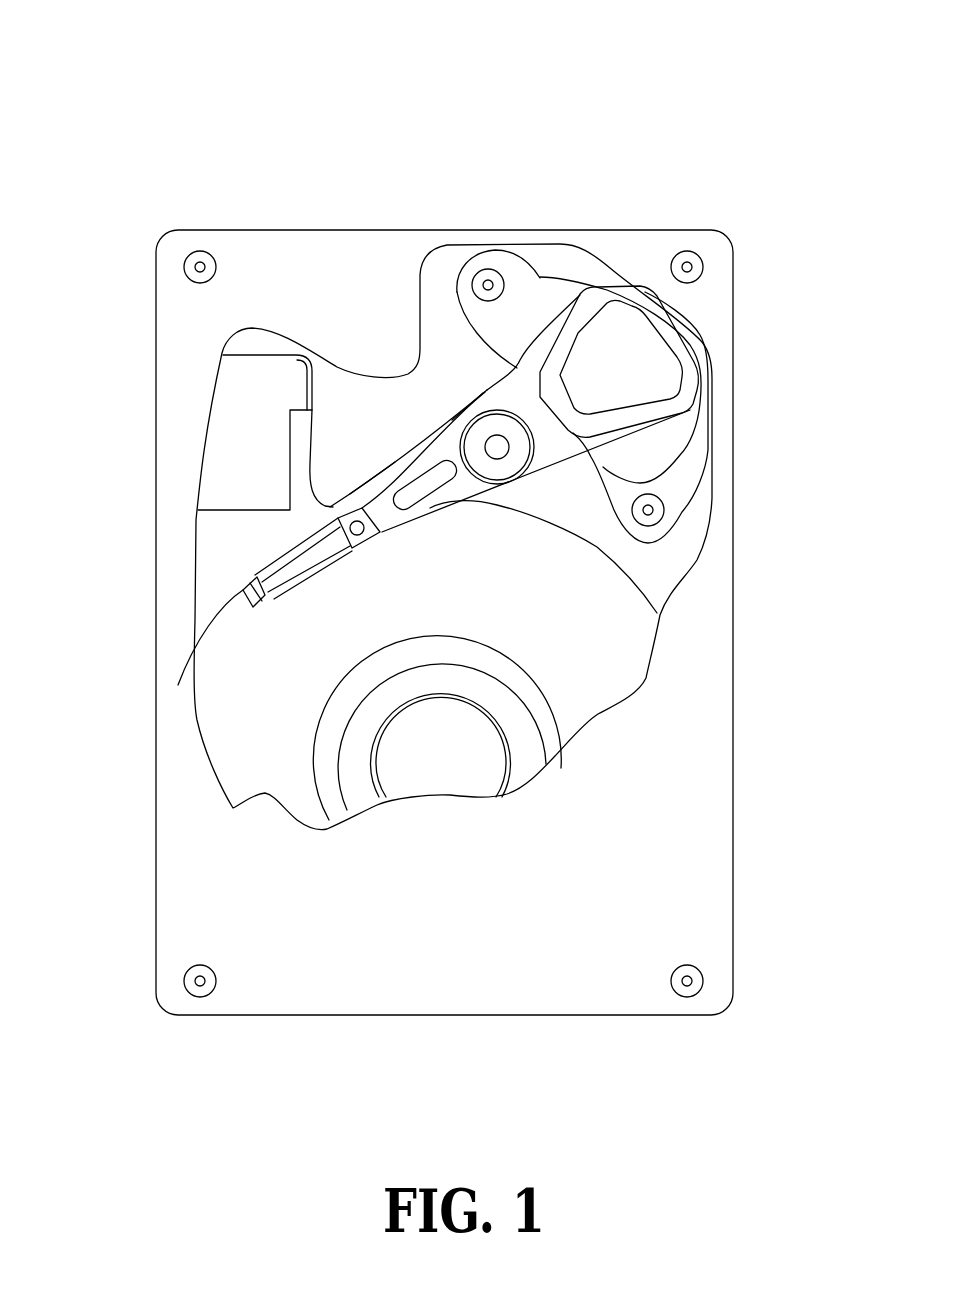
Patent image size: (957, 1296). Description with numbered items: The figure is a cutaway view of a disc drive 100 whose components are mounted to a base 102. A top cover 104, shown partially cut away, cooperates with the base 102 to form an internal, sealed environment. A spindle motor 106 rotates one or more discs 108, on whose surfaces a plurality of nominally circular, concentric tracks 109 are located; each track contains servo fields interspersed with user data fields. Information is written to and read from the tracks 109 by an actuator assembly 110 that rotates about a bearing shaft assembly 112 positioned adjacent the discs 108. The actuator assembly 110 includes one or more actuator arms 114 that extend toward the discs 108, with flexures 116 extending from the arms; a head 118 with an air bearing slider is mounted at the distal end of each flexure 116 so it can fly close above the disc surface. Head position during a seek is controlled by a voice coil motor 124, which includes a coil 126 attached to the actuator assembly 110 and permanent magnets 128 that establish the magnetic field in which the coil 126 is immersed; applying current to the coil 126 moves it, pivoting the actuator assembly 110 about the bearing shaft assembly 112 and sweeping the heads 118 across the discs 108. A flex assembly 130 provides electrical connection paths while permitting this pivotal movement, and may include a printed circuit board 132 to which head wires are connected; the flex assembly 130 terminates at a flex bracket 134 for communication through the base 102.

The disc drive 100 is at (258, 118).
The base 102 is at (225, 570).
The top cover 104 is at (205, 858).
The spindle motor 106 is at (443, 767).
The discs 108 is at (607, 680).
The tracks 109 is at (330, 756).
The actuator assembly 110 is at (465, 486).
The bearing shaft assembly 112 is at (510, 458).
The actuator arms 114 is at (430, 500).
The flexures 116 is at (303, 567).
The head 118 is at (243, 602).
The voice coil motor 124 is at (533, 247).
The coil 126 is at (680, 357).
The permanent magnets 128 is at (530, 310).
The flex assembly 130 is at (410, 445).
The printed circuit board 132 is at (460, 412).
The flex bracket 134 is at (240, 447).